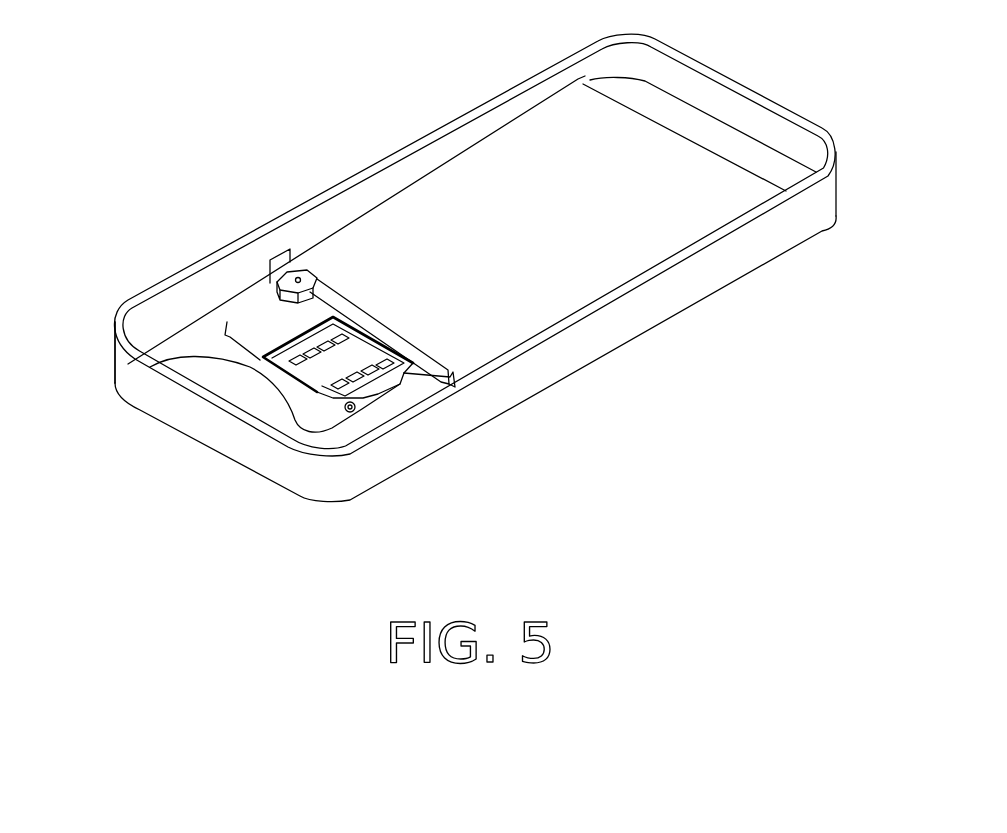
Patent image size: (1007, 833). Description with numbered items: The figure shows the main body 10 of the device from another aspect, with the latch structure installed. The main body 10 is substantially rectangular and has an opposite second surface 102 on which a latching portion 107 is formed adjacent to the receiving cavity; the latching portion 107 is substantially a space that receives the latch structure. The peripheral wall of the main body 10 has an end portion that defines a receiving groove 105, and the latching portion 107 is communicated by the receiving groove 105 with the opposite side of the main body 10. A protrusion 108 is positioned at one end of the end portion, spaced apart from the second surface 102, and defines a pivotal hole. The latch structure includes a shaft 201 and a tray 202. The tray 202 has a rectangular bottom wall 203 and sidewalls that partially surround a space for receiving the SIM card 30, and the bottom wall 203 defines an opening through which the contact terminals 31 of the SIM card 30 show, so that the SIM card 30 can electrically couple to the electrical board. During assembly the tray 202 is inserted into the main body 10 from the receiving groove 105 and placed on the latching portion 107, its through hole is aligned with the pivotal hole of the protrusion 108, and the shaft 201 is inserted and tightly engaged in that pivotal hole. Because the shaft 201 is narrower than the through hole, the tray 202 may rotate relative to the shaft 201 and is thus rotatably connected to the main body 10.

The main body 10 is at (750, 93).
The second surface 102 is at (570, 108).
The latching portion 107 is at (128, 364).
The protrusion 108 is at (272, 282).
The shaft 201 is at (300, 277).
The bottom wall 203 is at (252, 335).
The SIM card 30 is at (316, 374).
The contact terminals 31 is at (268, 372).
The tray 202 is at (368, 397).
The receiving groove 105 is at (447, 382).